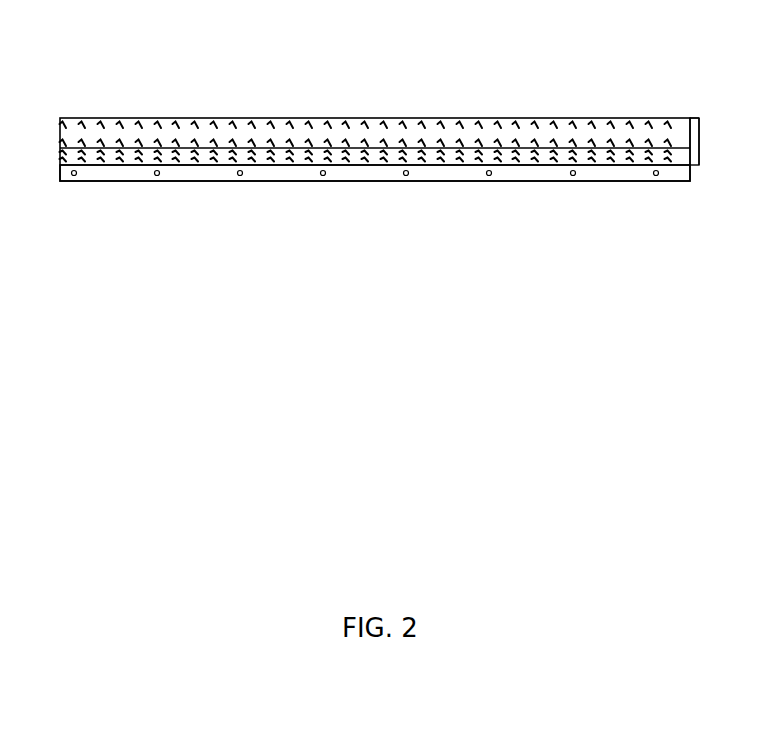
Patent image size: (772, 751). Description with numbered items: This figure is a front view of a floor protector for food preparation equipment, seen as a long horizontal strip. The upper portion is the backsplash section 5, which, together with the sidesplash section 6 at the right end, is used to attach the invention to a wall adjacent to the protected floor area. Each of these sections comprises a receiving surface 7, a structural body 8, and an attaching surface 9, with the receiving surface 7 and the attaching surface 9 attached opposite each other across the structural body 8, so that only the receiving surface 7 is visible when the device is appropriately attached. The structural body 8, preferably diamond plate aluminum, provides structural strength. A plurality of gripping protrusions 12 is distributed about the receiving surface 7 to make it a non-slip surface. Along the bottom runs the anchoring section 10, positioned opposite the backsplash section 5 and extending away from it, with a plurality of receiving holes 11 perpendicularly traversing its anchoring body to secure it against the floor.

The backsplash section 5 is at (579, 109).
The sidesplash section 6 is at (704, 152).
The receiving surface 7 is at (373, 130).
The structural body 8 is at (694, 121).
The attaching surface 9 is at (699, 127).
The anchoring section 10 is at (287, 174).
The plurality of receiving holes 11 is at (488, 181).
The plurality of gripping protrusions 12 is at (103, 124).